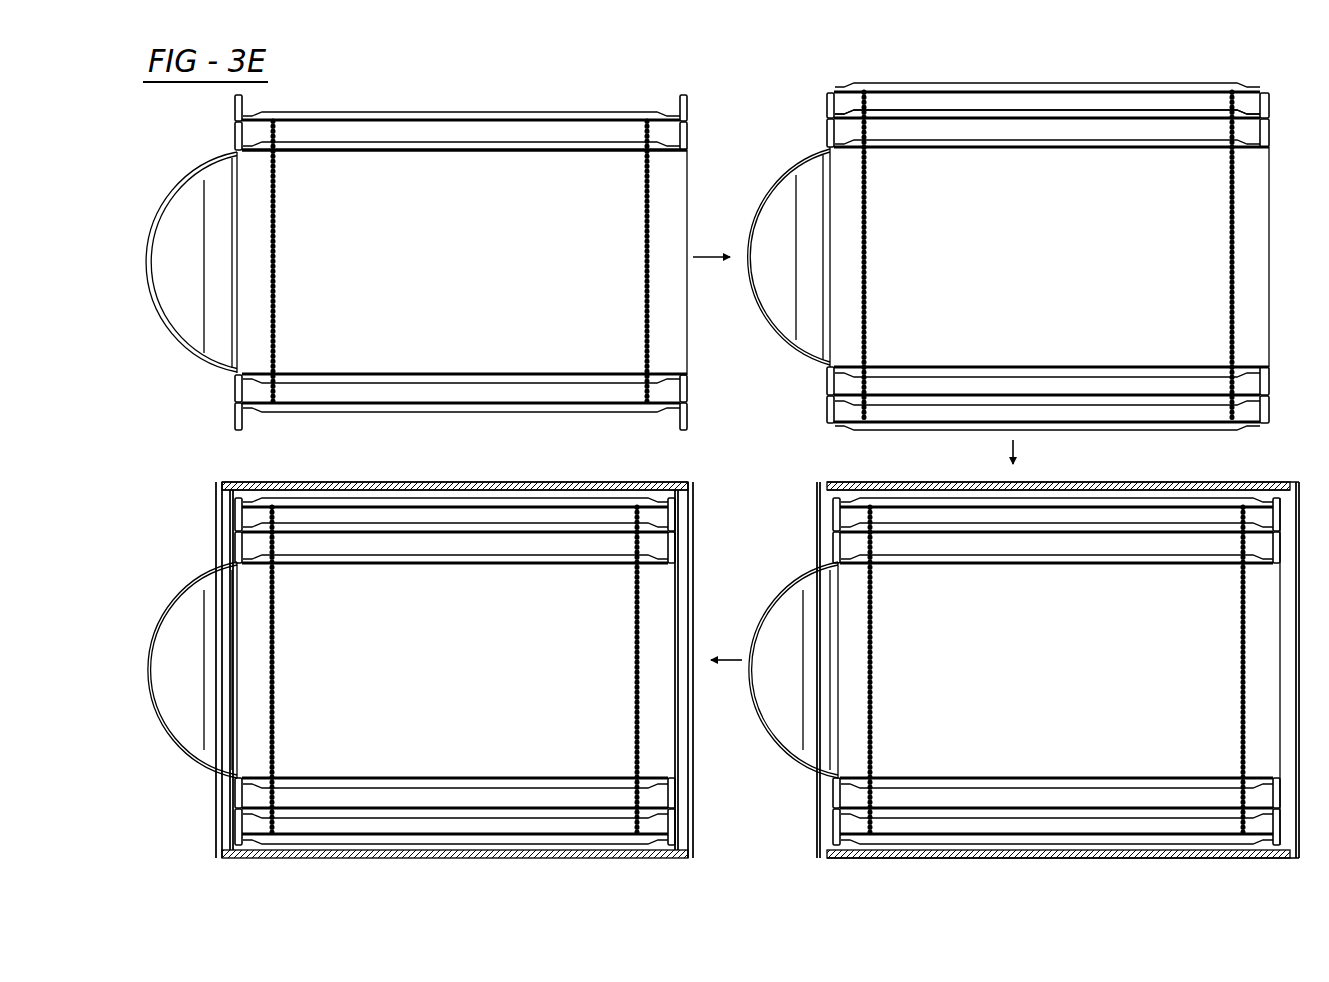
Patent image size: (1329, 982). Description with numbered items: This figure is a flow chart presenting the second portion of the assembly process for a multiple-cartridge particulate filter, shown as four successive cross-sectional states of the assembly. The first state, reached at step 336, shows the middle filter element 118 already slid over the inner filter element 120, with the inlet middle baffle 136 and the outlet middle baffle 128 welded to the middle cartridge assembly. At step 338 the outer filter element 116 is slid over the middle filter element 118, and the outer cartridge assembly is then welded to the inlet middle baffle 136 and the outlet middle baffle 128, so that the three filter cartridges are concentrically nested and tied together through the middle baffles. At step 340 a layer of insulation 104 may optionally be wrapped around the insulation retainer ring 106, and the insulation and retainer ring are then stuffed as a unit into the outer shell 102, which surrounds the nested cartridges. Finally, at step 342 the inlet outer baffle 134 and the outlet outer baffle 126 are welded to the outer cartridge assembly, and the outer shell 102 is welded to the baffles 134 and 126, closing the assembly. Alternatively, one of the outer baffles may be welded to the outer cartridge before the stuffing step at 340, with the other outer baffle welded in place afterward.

The outer shell 102 is at (390, 485).
The layer of insulation 104 is at (592, 487).
The insulation retainer ring 106 is at (247, 492).
The outer filter element 116 is at (915, 95).
The middle filter element 118 is at (490, 112).
The inner filter element 120 is at (378, 152).
The outlet outer baffle 126 is at (676, 497).
The outlet perforated middle baffle 128 is at (686, 95).
The inlet outer perforated baffle 134 is at (235, 500).
The middle solid inlet baffle 136 is at (242, 108).
The step 336 is at (558, 76).
The step 338 is at (1186, 72).
The step 340 is at (1125, 473).
The step 342 is at (525, 463).